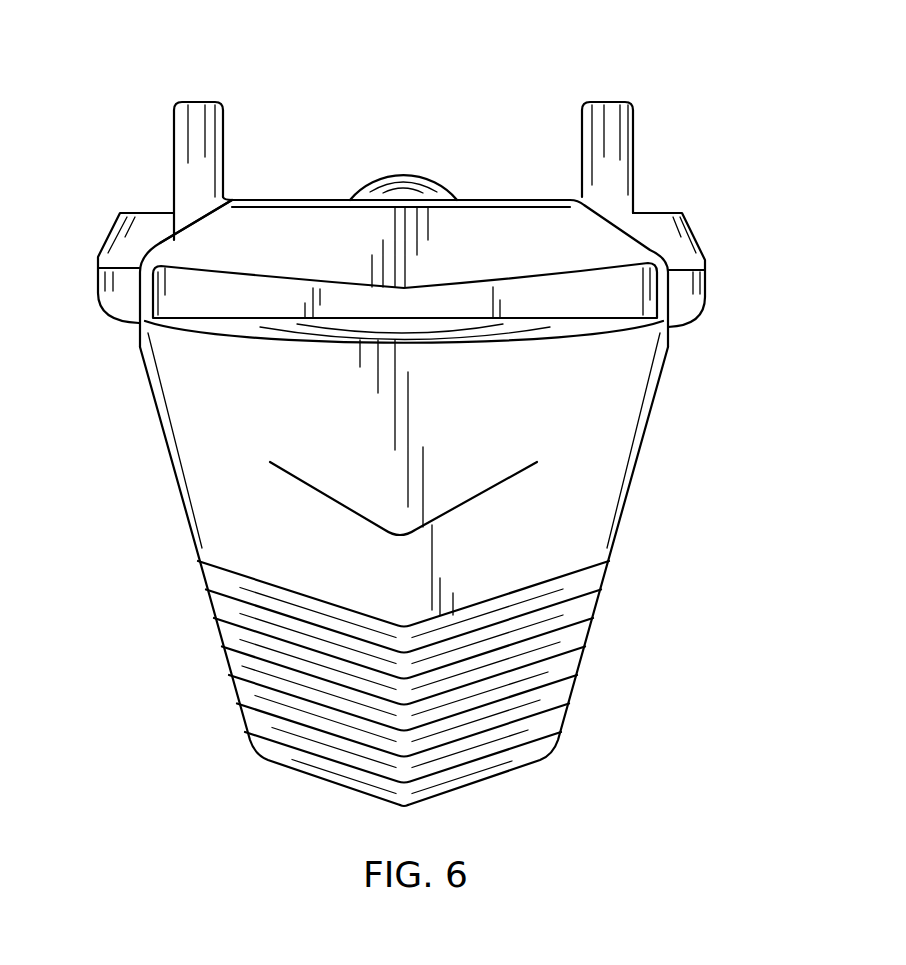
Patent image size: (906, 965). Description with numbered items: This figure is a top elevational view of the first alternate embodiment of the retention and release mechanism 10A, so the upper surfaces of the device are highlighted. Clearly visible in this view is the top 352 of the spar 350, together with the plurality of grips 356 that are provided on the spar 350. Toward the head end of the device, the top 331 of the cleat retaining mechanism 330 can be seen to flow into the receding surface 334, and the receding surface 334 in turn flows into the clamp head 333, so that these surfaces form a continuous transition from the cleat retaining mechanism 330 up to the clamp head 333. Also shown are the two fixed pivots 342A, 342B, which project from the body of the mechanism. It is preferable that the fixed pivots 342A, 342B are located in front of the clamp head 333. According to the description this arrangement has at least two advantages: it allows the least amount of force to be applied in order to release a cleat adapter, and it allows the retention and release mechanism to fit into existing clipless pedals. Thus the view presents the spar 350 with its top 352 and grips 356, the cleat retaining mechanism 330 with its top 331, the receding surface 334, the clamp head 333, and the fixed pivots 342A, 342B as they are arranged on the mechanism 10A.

The retention and release mechanism 10A is at (640, 651).
The fixed pivot 342A is at (613, 115).
The fixed pivot 342B is at (197, 113).
The clamp head 333 is at (497, 200).
The receding surface 334 is at (213, 247).
The top of the cleat retaining mechanism 331 is at (182, 297).
The cleat retaining mechanism 330 is at (705, 293).
The top of the spar 352 is at (202, 462).
The spar 350 is at (613, 460).
The grips 356 is at (267, 678).